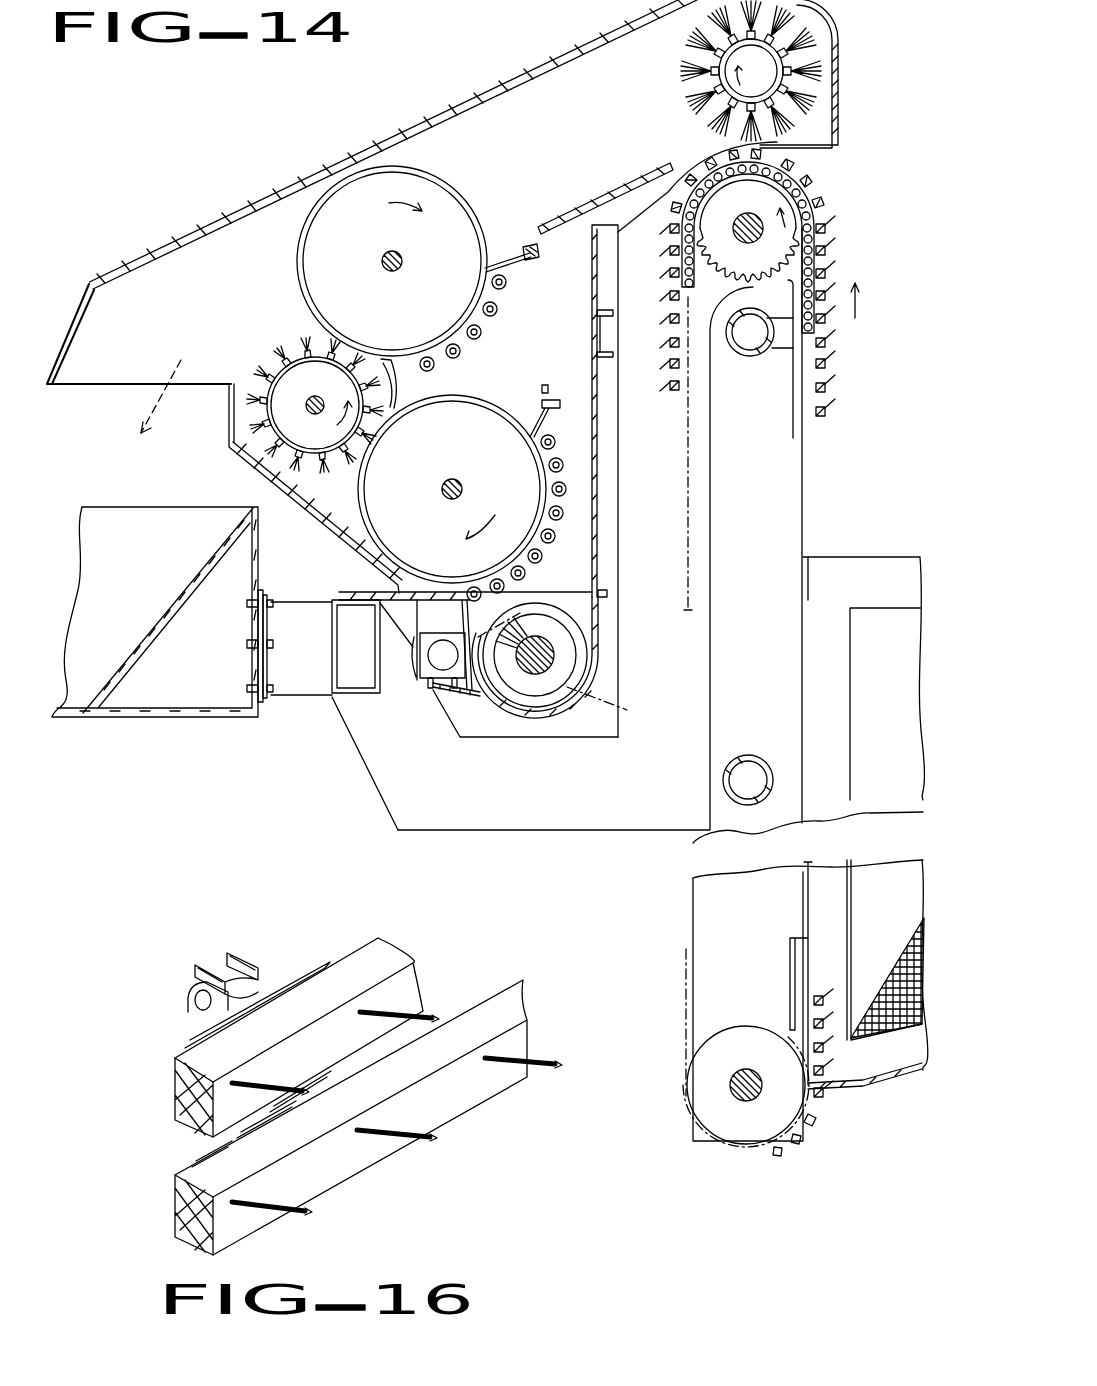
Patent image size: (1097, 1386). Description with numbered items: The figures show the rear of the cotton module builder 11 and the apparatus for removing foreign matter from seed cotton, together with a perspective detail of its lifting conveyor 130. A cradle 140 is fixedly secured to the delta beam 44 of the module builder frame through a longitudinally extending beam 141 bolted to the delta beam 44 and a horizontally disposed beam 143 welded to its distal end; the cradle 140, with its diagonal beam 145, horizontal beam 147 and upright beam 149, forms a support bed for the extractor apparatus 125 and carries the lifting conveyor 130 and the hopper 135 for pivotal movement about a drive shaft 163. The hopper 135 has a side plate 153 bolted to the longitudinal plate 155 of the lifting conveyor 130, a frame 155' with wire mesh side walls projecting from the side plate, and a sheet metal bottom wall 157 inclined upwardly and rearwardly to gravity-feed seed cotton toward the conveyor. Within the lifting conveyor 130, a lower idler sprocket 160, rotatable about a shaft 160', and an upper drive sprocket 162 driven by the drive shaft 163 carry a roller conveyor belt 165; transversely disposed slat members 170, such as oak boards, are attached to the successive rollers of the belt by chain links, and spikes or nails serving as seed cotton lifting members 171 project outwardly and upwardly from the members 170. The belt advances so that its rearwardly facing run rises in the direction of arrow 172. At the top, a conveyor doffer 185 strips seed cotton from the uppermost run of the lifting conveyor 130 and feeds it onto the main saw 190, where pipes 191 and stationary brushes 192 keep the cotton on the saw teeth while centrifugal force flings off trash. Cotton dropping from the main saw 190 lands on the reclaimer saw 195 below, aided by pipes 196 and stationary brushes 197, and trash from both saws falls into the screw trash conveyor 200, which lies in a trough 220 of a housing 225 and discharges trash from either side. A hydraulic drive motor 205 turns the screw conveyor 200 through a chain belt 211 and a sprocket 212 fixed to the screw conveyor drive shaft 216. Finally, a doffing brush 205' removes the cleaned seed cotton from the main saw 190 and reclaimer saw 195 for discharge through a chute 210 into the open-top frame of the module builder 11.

In FIG. 14, the cotton module builder 11 is at (142, 488).
In FIG. 14, the delta beam 44 is at (189, 718).
In FIG. 14, the extractor apparatus 125 is at (311, 110).
In FIG. 14, the lifting conveyor 130 is at (842, 420).
In FIG. 14, the hopper 135 is at (864, 550).
In FIG. 14, the cradle 140 is at (517, 837).
In FIG. 14, the longitudinally extending beam 141 is at (308, 682).
In FIG. 14, the horizontally disposed beam 143 is at (361, 694).
In FIG. 14, the diagonal beam 145 is at (381, 803).
In FIG. 14, the horizontal beam 147 is at (455, 830).
In FIG. 14, the upright beam 149 is at (685, 681).
In FIG. 14, the side plate 153 is at (890, 878).
In FIG. 14, the longitudinal plate 155 is at (830, 945).
In FIG. 14, the frame with wire mesh side walls 155' is at (890, 980).
In FIG. 14, the bottom wall 157 is at (891, 1080).
In FIG. 14, the lower sprocket 160 is at (746, 1056).
In FIG. 14, the shaft 160' is at (744, 1103).
In FIG. 14, the upper sprocket 162 is at (757, 268).
In FIG. 14, the drive shaft 163 is at (741, 214).
In FIG. 14, the roller conveyor belt 165 is at (811, 190).
In FIG. 16, the roller conveyor belt 165 is at (242, 955).
In FIG. 14, the transversely disposed member 170 is at (712, 163).
In FIG. 16, the transversely disposed member 170 is at (478, 1015).
In FIG. 14, the seed cotton lifting member 171 is at (834, 250).
In FIG. 16, the seed cotton lifting member 171 is at (362, 1021).
In FIG. 14, the arrow 172 is at (858, 297).
In FIG. 14, the conveyor doffer 185 is at (665, 82).
In FIG. 14, the main saw 190 is at (452, 200).
In FIG. 14, the pipe 191 is at (507, 322).
In FIG. 14, the stationary brush 192 is at (508, 255).
In FIG. 14, the reclaimer saw 195 is at (457, 412).
In FIG. 14, the pipe 196 is at (563, 500).
In FIG. 14, the stationary brush 197 is at (528, 428).
In FIG. 14, the screw trash conveyor 200 is at (594, 613).
In FIG. 14, the hydraulic drive motor 205 is at (426, 657).
In FIG. 14, the doffing brush 205' is at (305, 385).
In FIG. 14, the chute 210 is at (107, 375).
In FIG. 14, the chain belt 211 is at (473, 693).
In FIG. 14, the sprocket 212 is at (618, 706).
In FIG. 14, the screw conveyor drive shaft 216 is at (532, 637).
In FIG. 14, the trough 220 is at (513, 706).
In FIG. 14, the housing 225 is at (235, 213).